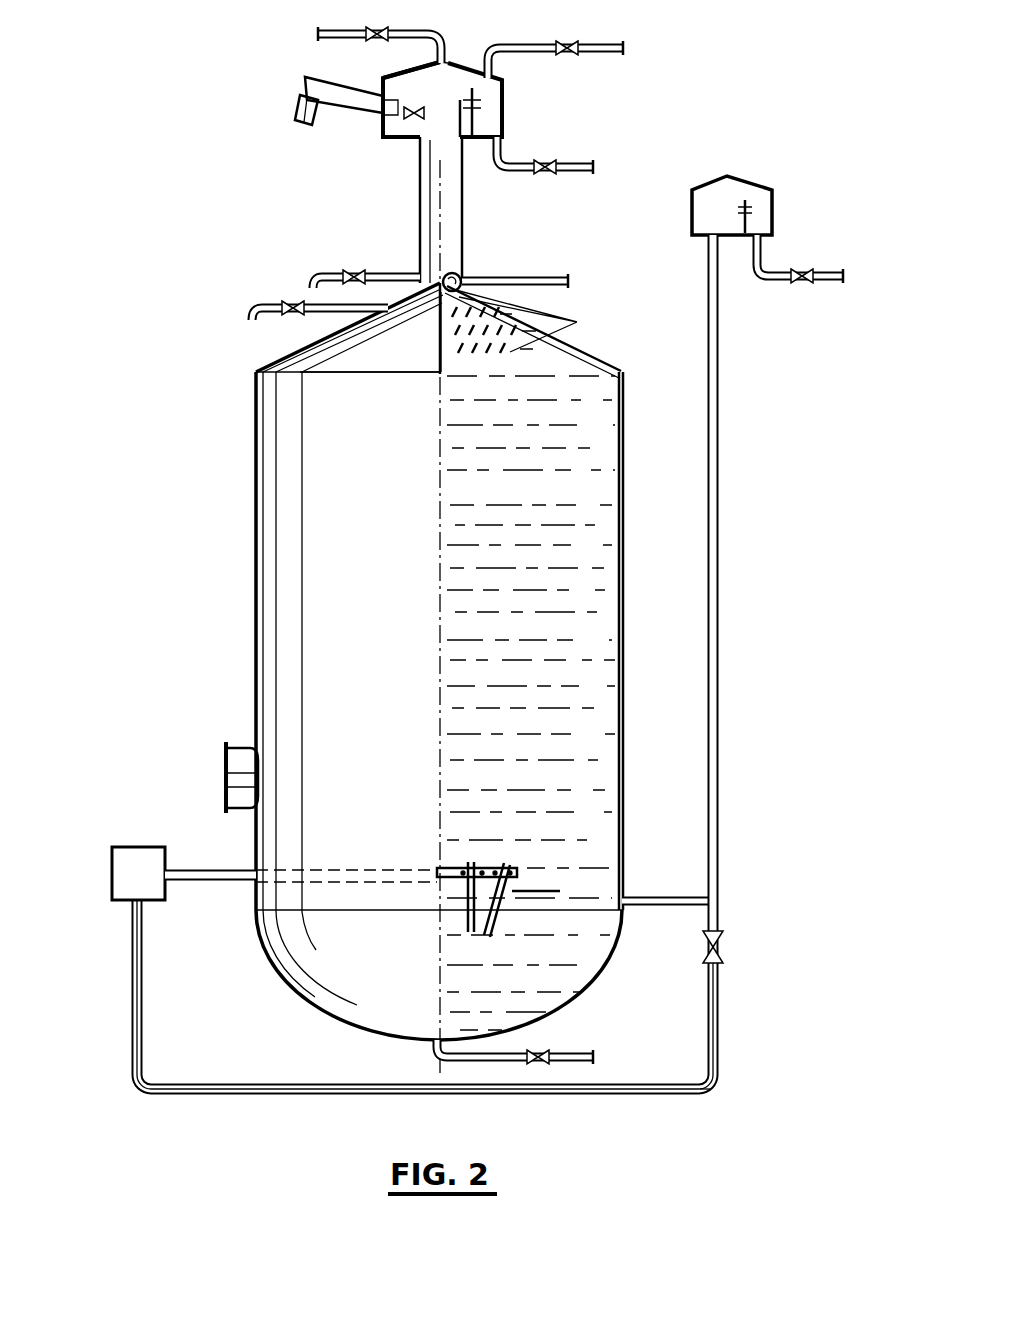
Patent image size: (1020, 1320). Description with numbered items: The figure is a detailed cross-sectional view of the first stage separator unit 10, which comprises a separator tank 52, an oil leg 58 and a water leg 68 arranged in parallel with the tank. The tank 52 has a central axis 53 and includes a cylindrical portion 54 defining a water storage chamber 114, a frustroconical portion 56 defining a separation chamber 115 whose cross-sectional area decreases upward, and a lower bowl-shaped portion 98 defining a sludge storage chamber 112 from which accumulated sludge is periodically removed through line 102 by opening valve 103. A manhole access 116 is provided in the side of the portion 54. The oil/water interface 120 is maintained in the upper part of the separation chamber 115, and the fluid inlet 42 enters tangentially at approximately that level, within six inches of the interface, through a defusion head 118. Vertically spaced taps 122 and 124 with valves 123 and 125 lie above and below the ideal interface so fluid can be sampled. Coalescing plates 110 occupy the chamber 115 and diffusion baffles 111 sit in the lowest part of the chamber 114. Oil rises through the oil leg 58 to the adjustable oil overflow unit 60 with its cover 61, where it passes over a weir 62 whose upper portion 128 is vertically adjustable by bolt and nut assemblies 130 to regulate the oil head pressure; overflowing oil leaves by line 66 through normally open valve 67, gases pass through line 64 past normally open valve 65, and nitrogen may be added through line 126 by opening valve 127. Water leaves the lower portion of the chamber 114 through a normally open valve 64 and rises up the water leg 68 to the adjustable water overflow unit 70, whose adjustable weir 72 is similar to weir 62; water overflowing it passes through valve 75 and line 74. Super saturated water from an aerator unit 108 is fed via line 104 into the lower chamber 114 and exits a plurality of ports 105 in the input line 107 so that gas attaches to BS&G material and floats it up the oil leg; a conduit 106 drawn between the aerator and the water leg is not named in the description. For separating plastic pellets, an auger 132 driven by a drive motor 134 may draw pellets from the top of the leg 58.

The first stage separator unit 10 is at (764, 603).
The fluid inlet 42 is at (520, 279).
The separator tank 52 is at (242, 584).
The central axis 53 is at (442, 530).
The cylindrical portion 54 is at (256, 630).
The frustroconical portion 56 is at (270, 363).
The oil leg 58 is at (420, 205).
The adjustable oil overflow unit 60 is at (405, 138).
The cover 61 is at (417, 78).
The weir 62 is at (480, 126).
The line 64 is at (410, 33).
The valve 65 is at (373, 31).
The line 66 is at (503, 157).
The valve 67 is at (548, 160).
The water leg 68 is at (720, 532).
The adjustable water overflow unit 70 is at (770, 233).
The adjustable weir 72 is at (747, 222).
The line 74 is at (770, 285).
The valve 75 is at (810, 283).
The lower bowl-shaped portion 98 is at (283, 985).
The line 102 is at (478, 1064).
The valve 103 is at (545, 1050).
The line 104 is at (218, 868).
The ports 105 is at (502, 866).
The recirculation loop 106 is at (690, 1100).
The input line 107 is at (722, 955).
The aerator unit 108 is at (122, 846).
The coalescing plates 110 is at (536, 321).
The diffusion baffles 111 is at (545, 895).
The sludge storage chamber 112 is at (540, 994).
The water storage chamber 114 is at (392, 830).
The separation chamber 115 is at (416, 334).
The manhole access 116 is at (232, 765).
The defusion head 118 is at (458, 284).
The oil/water interface 120 is at (446, 302).
The tap 122 is at (320, 313).
The valve 123 is at (290, 300).
The tap 124 is at (390, 272).
The valve 125 is at (350, 271).
The line 126 is at (543, 45).
The valve 127 is at (570, 54).
The upper portion of the weir 128 is at (446, 64).
The bolt and nut assemblies 130 is at (481, 106).
The auger 132 is at (345, 104).
The drive motor 134 is at (300, 101).